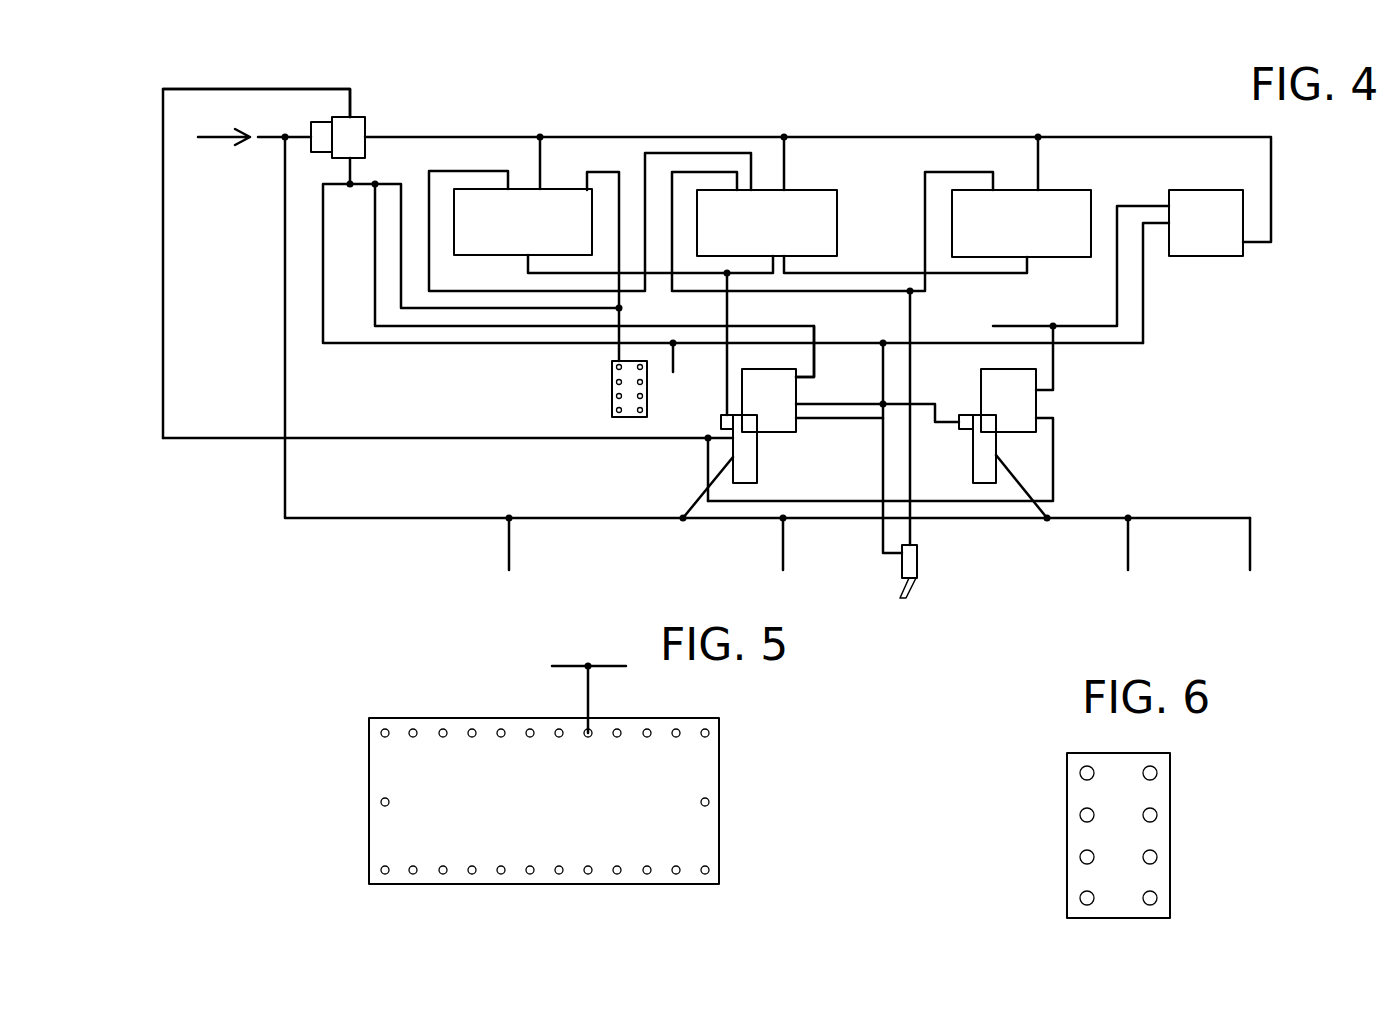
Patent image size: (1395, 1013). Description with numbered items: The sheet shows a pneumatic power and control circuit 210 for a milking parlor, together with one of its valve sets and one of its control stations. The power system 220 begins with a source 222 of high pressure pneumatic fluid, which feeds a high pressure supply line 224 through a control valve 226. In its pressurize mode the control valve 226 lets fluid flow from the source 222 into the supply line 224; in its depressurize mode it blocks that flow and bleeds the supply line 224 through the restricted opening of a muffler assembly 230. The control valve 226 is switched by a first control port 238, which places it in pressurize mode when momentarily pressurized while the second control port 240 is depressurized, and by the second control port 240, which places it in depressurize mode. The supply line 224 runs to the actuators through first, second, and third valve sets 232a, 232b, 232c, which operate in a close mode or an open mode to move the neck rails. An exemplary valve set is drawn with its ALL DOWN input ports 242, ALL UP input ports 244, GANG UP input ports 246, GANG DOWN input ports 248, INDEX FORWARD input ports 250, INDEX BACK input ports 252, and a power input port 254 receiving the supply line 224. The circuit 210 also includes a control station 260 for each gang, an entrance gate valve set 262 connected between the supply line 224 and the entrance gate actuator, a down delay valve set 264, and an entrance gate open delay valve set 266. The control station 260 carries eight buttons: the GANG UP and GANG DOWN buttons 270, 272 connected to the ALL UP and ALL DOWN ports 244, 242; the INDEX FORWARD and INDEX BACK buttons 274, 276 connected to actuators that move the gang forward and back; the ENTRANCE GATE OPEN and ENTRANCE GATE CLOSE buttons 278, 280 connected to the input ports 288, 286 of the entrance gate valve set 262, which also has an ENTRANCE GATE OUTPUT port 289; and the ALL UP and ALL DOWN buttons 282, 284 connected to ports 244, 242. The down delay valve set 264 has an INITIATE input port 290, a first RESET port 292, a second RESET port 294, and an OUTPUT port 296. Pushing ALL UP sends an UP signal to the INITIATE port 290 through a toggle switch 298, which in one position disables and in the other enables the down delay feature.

In FIG. 4, the control circuit 210 is at (1108, 101).
In FIG. 4, the power system 220 is at (1121, 117).
In FIG. 4, the source of high pressure pneumatic fluid 222 is at (222, 143).
In FIG. 4, the high pressure supply line 224 is at (688, 135).
In FIG. 5, the high pressure supply line 224 is at (573, 708).
In FIG. 4, the control valve 226 is at (360, 128).
In FIG. 4, the muffler assembly 230 is at (313, 123).
In FIG. 4, the first valve set 232a is at (601, 257).
In FIG. 4, the second valve set 232b is at (849, 293).
In FIG. 4, the third valve set 232c is at (1021, 223).
In FIG. 5, the third valve set 232c is at (408, 707).
In FIG. 4, the first control port 238 is at (355, 162).
In FIG. 4, the second control port 240 is at (350, 117).
In FIG. 5, the ALL DOWN input ports 242 is at (626, 887).
In FIG. 5, the ALL UP input ports 244 is at (437, 711).
In FIG. 5, the GANG UP input ports 246 is at (610, 711).
In FIG. 5, the GANG DOWN input ports 248 is at (638, 887).
In FIG. 5, the INDEX FORWARD input ports 250 is at (375, 887).
In FIG. 5, the INDEX BACK input ports 252 is at (463, 887).
In FIG. 5, the power input port 254 is at (570, 706).
In FIG. 4, the control station 260 is at (605, 392).
In FIG. 6, the control station 260 is at (1058, 750).
In FIG. 4, the entrance gate valve set 262 is at (1206, 223).
In FIG. 4, the down delay valve set 264 is at (739, 443).
In FIG. 4, the entrance gate open delay valve set 266 is at (1003, 443).
In FIG. 6, the GANG UP button 270 is at (1080, 774).
In FIG. 6, the GANG DOWN button 272 is at (1157, 772).
In FIG. 6, the INDEX FORWARD button 274 is at (1080, 816).
In FIG. 6, the INDEX BACK button 276 is at (1157, 814).
In FIG. 6, the ENTRANCE GATE OPEN button 278 is at (1080, 858).
In FIG. 6, the ENTRANCE GATE CLOSE button 280 is at (1157, 856).
In FIG. 6, the ALL UP button 282 is at (1080, 899).
In FIG. 6, the ALL DOWN button 284 is at (1157, 897).
In FIG. 4, the ENTRANCE GATE CLOSE input port 286 is at (1167, 205).
In FIG. 4, the ENTRANCE GATE input port 288 is at (1167, 225).
In FIG. 4, the ENTRANCE GATE OUTPUT port 289 is at (950, 420).
In FIG. 4, the INITIATE input port 290 is at (805, 420).
In FIG. 4, the first RESET port 292 is at (802, 401).
In FIG. 4, the second RESET port 294 is at (806, 377).
In FIG. 4, the OUTPUT port 296 is at (722, 437).
In FIG. 4, the toggle switch 298 is at (917, 560).